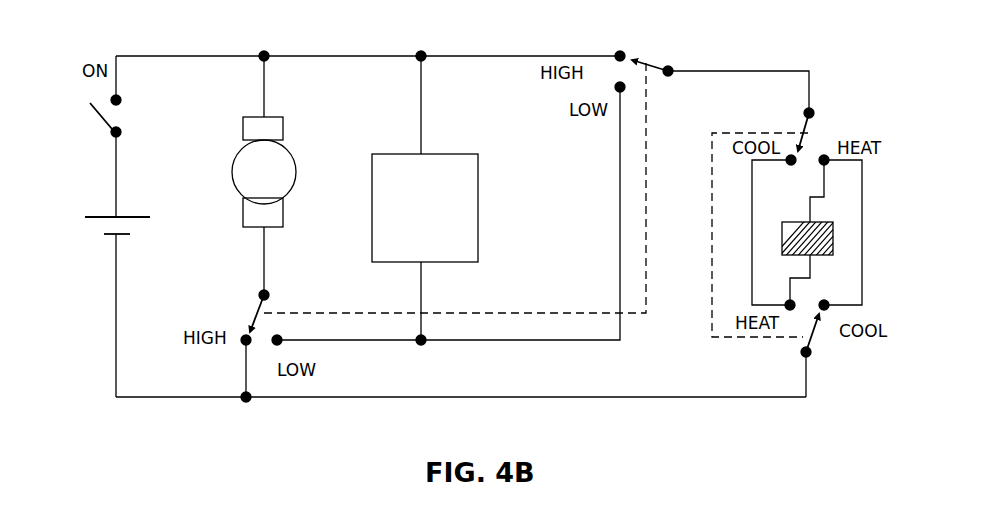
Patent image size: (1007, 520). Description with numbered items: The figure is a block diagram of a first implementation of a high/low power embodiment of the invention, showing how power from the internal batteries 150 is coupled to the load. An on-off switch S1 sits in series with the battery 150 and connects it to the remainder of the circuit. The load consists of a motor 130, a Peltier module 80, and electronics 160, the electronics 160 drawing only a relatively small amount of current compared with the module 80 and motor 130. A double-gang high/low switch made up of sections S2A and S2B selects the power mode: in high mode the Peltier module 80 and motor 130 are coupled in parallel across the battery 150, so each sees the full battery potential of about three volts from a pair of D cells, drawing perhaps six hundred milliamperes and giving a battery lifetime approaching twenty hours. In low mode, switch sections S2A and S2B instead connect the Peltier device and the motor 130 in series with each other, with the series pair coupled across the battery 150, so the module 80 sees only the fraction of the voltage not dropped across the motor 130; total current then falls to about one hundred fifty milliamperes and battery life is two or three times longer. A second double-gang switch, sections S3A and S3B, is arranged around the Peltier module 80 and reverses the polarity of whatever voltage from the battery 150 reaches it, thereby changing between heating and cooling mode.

The motor 130 is at (277, 177).
The electronics 160 is at (452, 215).
The Peltier module 80 is at (800, 227).
The batteries 150 is at (128, 222).
The on-off switch S1 is at (120, 116).
The high/low switch section S2A is at (237, 303).
The high/low switch section S2B is at (643, 60).
The heat/cool mode switch section S3A is at (813, 133).
The heat/cool mode switch section S3B is at (822, 330).